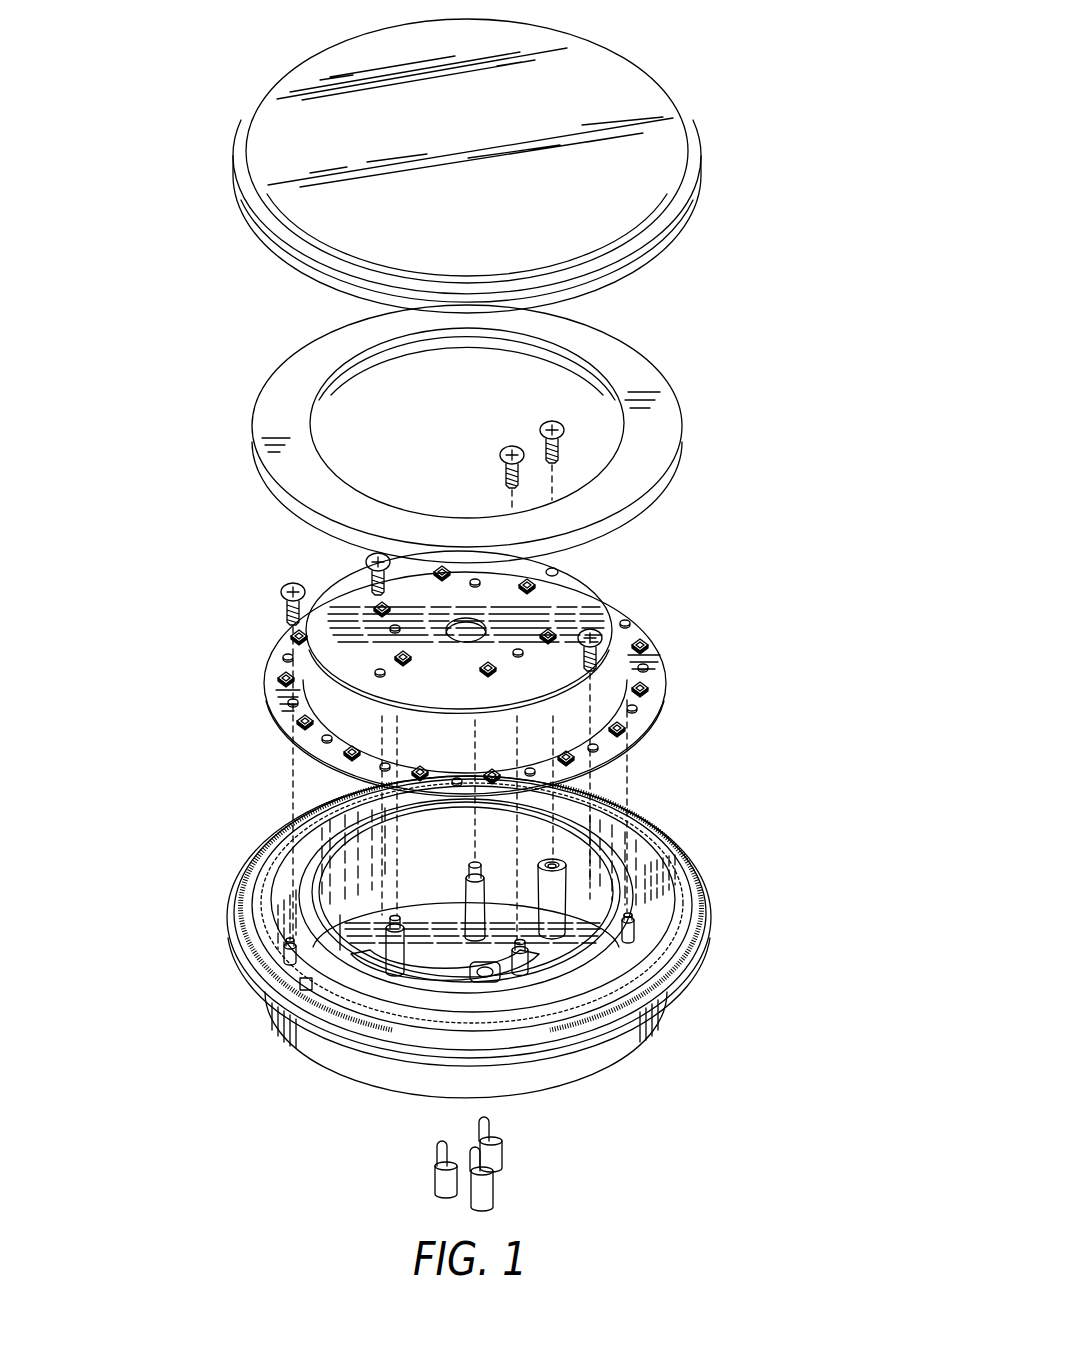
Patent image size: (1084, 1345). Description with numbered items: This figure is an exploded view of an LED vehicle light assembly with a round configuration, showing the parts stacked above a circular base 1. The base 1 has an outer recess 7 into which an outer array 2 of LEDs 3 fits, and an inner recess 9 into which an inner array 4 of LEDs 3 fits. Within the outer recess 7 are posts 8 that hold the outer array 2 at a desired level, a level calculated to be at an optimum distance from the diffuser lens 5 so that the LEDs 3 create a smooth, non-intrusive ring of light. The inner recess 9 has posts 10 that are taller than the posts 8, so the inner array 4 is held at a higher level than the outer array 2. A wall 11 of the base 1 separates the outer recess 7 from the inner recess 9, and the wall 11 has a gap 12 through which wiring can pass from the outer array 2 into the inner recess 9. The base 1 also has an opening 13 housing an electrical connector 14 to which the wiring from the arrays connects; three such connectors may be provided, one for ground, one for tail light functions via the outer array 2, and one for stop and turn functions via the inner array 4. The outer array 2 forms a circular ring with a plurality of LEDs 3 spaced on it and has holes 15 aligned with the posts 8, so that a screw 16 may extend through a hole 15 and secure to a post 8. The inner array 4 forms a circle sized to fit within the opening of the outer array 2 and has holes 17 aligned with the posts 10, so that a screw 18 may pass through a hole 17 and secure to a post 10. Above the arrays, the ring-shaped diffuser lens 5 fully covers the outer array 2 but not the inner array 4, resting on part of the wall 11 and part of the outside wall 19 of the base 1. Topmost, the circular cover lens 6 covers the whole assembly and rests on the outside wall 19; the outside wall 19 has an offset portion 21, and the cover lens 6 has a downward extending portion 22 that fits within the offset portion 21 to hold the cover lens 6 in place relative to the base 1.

The base 1 is at (436, 970).
The outer array 2 is at (655, 712).
The LEDs 3 is at (648, 688).
The inner array 4 is at (578, 587).
The diffuser lens 5 is at (607, 352).
The cover lens 6 is at (617, 84).
The outer recess 7 is at (647, 892).
The posts 8 is at (640, 947).
The inner recess 9 is at (507, 863).
The posts 10 is at (521, 975).
The wall 11 is at (340, 889).
The gap 12 is at (337, 960).
The opening 13 is at (477, 985).
The electrical connector 14 is at (498, 1184).
The holes 15 is at (292, 701).
The screw 16 is at (284, 588).
The holes 17 is at (560, 572).
The screw 18 is at (563, 416).
The outside wall 19 is at (243, 885).
The offset portion 21 is at (237, 918).
The downward extending portion 22 is at (256, 250).